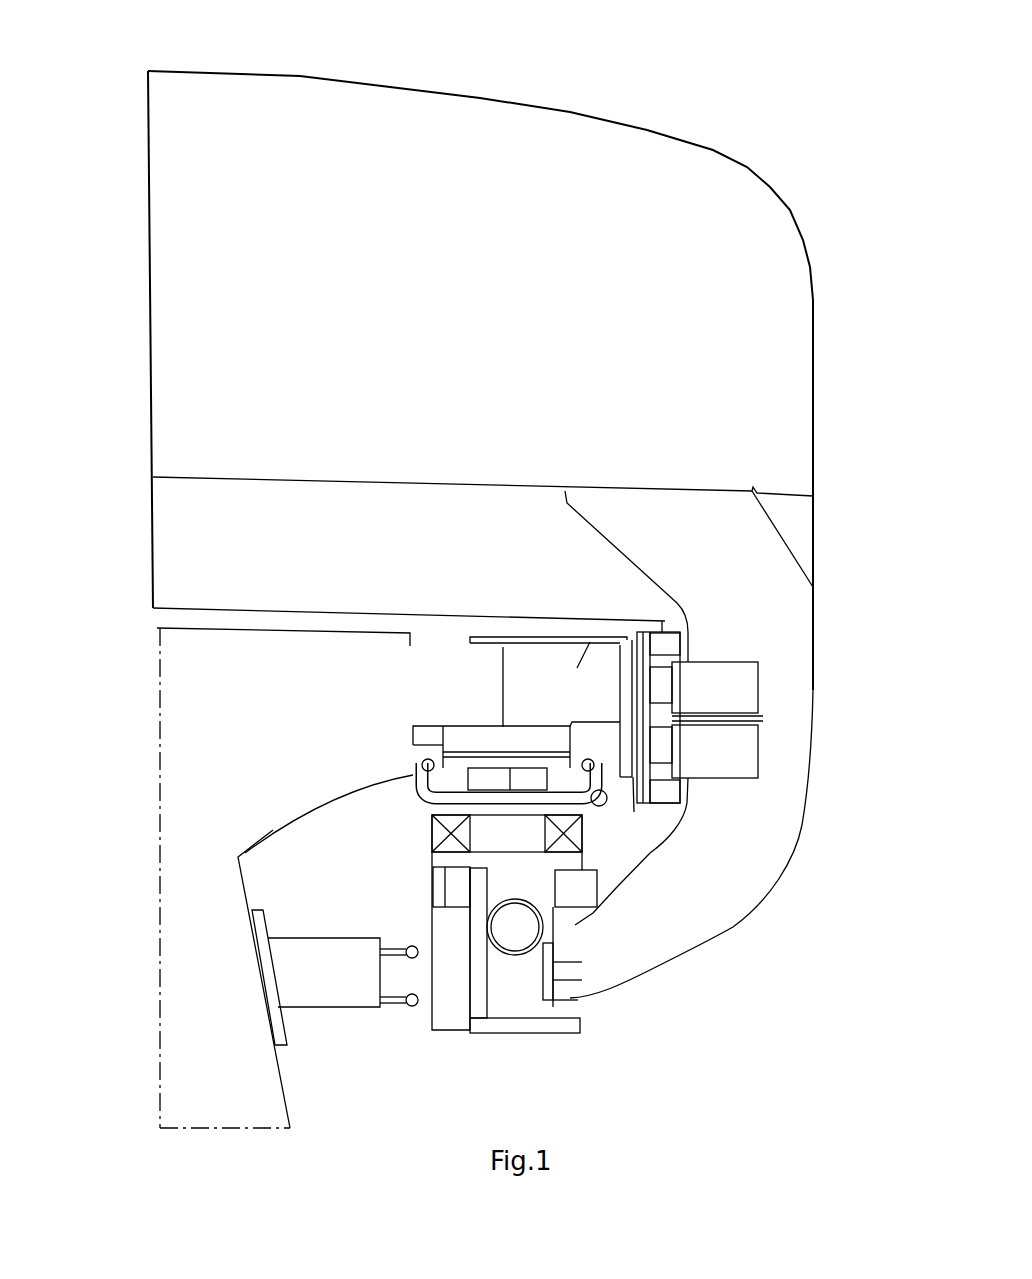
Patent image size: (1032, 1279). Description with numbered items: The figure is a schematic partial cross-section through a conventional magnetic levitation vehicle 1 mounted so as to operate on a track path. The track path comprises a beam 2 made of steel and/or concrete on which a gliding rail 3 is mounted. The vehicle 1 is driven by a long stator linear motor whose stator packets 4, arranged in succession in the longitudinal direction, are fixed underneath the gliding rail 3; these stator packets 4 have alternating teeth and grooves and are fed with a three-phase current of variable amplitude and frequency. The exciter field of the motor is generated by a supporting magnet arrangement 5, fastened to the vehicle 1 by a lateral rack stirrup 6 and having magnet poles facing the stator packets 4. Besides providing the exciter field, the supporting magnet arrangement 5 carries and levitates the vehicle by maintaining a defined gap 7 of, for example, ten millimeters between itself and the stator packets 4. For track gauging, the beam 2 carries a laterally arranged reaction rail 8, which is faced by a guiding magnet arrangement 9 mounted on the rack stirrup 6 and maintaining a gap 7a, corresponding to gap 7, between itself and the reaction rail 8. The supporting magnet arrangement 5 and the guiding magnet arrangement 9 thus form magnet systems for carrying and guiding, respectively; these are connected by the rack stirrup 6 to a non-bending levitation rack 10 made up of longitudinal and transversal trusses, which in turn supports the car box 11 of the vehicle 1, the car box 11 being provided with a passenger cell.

The magnetic levitation vehicle 1 is at (497, 90).
The beam 2 is at (194, 1000).
The gliding rail 3 is at (577, 668).
The stator packet 4 is at (490, 780).
The supporting magnet arrangement 5 is at (517, 837).
The rack stirrup 6 is at (750, 605).
The gap 7 is at (612, 808).
The gap 7a is at (633, 783).
The reaction rail 8 is at (627, 733).
The guiding magnet arrangement 9 is at (675, 718).
The levitation rack 10 is at (212, 560).
The car box 11 is at (208, 287).